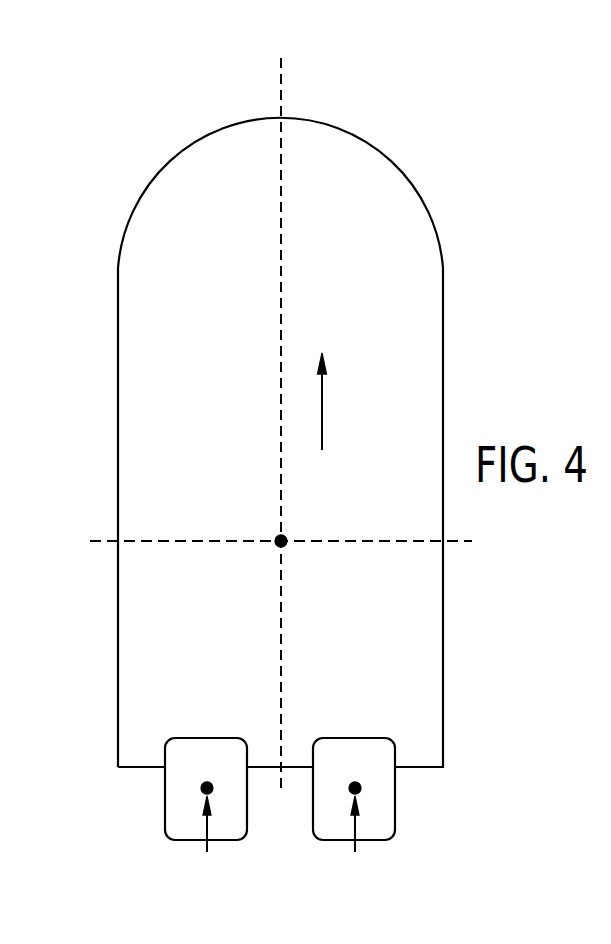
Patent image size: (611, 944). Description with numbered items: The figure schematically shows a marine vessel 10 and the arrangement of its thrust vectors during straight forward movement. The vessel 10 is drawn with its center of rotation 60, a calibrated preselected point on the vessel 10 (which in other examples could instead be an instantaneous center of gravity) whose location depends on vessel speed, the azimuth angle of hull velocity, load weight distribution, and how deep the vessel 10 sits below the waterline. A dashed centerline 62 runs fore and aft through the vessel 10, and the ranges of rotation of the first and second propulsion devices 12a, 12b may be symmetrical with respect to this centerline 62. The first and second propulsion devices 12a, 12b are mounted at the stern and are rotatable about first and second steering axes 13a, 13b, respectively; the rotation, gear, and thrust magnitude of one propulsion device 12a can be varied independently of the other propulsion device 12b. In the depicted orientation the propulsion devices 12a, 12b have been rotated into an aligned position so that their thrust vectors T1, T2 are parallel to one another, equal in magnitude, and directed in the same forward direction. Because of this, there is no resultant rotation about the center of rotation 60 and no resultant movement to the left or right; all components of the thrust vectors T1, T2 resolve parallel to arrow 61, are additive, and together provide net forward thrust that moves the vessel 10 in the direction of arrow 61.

The vessel 10 is at (428, 210).
The centerline 62 is at (282, 277).
The arrow 61 is at (322, 408).
The center of rotation 60 is at (287, 539).
The first propulsion device 12a is at (165, 790).
The second propulsion device 12b is at (395, 790).
The first steering axis 13a is at (207, 782).
The second steering axis 13b is at (355, 782).
The first thrust vector T1 is at (210, 843).
The second thrust vector T2 is at (358, 843).